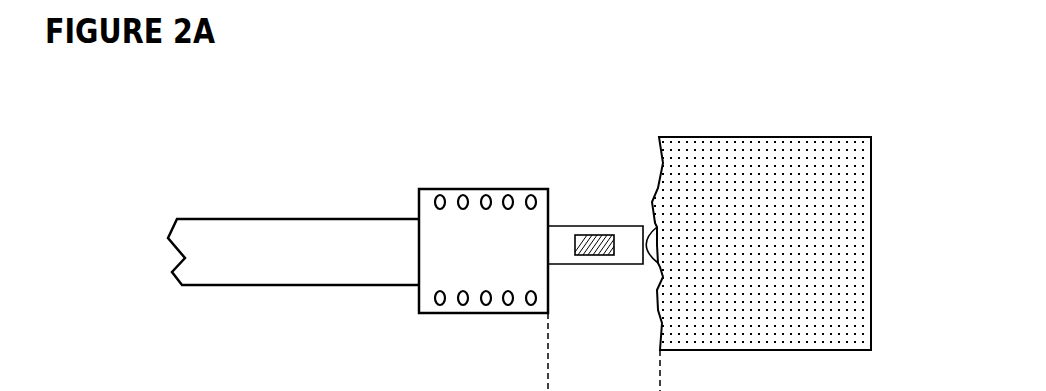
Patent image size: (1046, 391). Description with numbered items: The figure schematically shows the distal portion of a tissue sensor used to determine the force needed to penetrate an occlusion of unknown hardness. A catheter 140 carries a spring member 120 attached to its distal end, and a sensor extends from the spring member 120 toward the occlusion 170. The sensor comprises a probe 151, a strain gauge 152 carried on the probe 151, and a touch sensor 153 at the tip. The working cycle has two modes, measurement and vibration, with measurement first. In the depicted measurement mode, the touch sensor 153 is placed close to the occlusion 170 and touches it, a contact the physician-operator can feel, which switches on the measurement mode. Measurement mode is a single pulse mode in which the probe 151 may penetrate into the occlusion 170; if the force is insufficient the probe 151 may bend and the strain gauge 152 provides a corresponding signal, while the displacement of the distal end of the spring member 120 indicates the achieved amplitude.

The spring member 120 is at (432, 188).
The catheter 140 is at (275, 217).
The probe 151 is at (622, 235).
The strain gauge 152 is at (582, 235).
The touch sensor 153 is at (648, 228).
The occlusion 170 is at (735, 152).